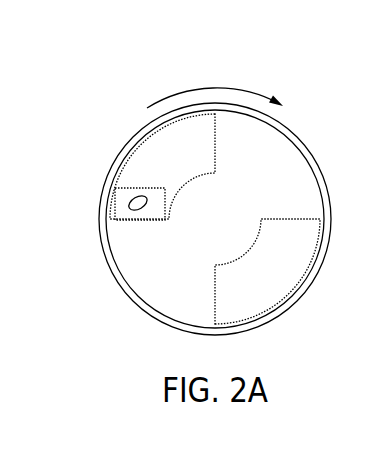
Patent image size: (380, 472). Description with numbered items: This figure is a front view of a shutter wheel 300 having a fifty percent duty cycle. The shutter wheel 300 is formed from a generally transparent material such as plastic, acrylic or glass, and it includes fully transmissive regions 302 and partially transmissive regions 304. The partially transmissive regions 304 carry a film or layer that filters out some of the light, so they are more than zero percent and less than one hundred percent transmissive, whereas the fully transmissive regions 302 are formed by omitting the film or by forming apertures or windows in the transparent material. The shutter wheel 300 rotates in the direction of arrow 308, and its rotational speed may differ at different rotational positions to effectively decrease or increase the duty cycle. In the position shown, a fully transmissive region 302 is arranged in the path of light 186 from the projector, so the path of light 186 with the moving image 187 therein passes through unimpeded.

The shutter wheel 300 is at (126, 314).
The 100% transmissive region 302 is at (142, 160).
The partially transmissive region 304 is at (282, 155).
The arrow 308 is at (190, 90).
The path of light 186 is at (143, 188).
The moving image 187 is at (144, 208).